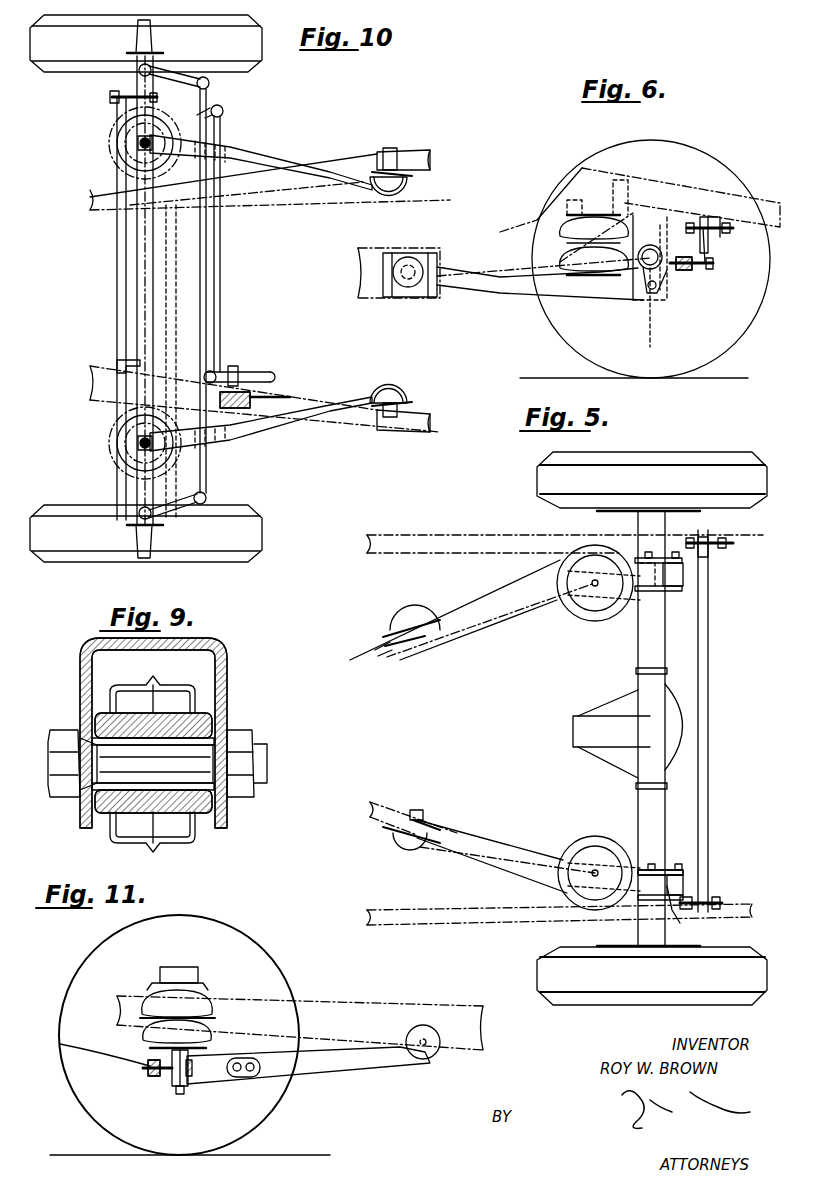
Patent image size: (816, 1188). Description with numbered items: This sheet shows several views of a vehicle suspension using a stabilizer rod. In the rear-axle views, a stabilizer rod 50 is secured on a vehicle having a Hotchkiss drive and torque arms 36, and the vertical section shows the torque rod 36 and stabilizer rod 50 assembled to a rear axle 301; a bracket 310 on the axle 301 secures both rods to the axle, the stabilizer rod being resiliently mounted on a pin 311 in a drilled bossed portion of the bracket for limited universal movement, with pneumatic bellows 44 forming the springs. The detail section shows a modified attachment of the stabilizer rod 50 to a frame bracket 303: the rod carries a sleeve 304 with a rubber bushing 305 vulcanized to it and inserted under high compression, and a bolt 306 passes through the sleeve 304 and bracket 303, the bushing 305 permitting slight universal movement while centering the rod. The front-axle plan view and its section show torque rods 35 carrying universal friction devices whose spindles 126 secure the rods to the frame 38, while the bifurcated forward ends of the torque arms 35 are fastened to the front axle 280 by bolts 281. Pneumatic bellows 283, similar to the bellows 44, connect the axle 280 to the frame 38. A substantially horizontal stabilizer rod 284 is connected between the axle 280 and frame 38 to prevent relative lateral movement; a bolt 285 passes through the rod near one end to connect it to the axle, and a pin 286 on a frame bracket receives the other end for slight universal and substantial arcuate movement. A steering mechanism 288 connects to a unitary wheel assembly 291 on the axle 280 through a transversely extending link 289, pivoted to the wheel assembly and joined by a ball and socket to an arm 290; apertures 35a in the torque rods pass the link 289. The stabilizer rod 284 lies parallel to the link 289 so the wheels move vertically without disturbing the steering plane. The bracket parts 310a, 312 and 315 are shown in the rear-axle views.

In FIG. 10, the torque rods 35 is at (296, 148).
In FIG. 11, the torque rods 35 is at (338, 1070).
In FIG. 10, the apertures 35a is at (218, 140).
In FIG. 11, the apertures 35a is at (232, 1078).
In FIG. 6, the torque arms 36 is at (548, 304).
In FIG. 5, the torque arms 36 is at (520, 624).
In FIG. 10, the frame 38 is at (366, 152).
In FIG. 6, the frame 38 is at (569, 233).
In FIG. 5, the frame 38 is at (565, 730).
In FIG. 11, the frame 38 is at (352, 1002).
In FIG. 6, the bellows 44 is at (556, 238).
In FIG. 5, the bellows 44 is at (590, 612).
In FIG. 6, the stabilizer rod 50 is at (708, 270).
In FIG. 5, the stabilizer rod 50 is at (710, 796).
In FIG. 9, the stabilizer rod 50 is at (196, 700).
In FIG. 10, the spindles 126 is at (404, 180).
In FIG. 10, the front axle 280 is at (140, 490).
In FIG. 11, the front axle 280 is at (184, 1088).
In FIG. 10, the bolts 281 is at (140, 148).
In FIG. 11, the bolts 281 is at (180, 1094).
In FIG. 10, the pneumatic bellows 283 is at (108, 138).
In FIG. 11, the pneumatic bellows 283 is at (148, 996).
In FIG. 10, the stabilizer rod 284 is at (117, 300).
In FIG. 11, the stabilizer rod 284 is at (60, 1044).
In FIG. 10, the bolt 285 is at (110, 100).
In FIG. 11, the bolt 285 is at (166, 1076).
In FIG. 10, the pin 286 is at (117, 372).
In FIG. 10, the steering mechanism 288 is at (262, 392).
In FIG. 10, the link 289 is at (222, 284).
In FIG. 11, the link 289 is at (260, 1040).
In FIG. 10, the arm 290 is at (235, 366).
In FIG. 10, the wheel assembly 291 is at (84, 72).
In FIG. 5, the wheel assembly 291 is at (652, 728).
In FIG. 6, the rear axle 301 is at (646, 282).
In FIG. 5, the rear axle 301 is at (668, 622).
In FIG. 9, the frame bracket 303 is at (80, 650).
In FIG. 9, the sleeve 304 is at (228, 724).
In FIG. 9, the rubber bushing 305 is at (212, 720).
In FIG. 9, the bolt 306 is at (268, 746).
In FIG. 6, the bracket 310 is at (656, 290).
In FIG. 5, the bracket 310 is at (678, 910).
In FIG. 5, the upper lug 310a is at (676, 870).
In FIG. 6, the pin 311 is at (716, 265).
In FIG. 5, the pin 311 is at (718, 898).
In FIG. 6, the bracket bolt 312 is at (733, 236).
In FIG. 5, the bracket bolt 312 is at (732, 550).
In FIG. 6, the mounting bracket 315 is at (716, 222).
In FIG. 5, the mounting bracket 315 is at (710, 550).